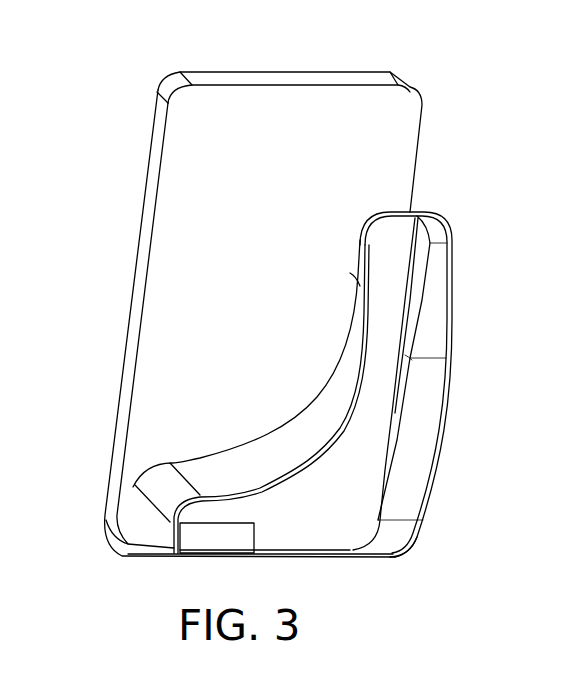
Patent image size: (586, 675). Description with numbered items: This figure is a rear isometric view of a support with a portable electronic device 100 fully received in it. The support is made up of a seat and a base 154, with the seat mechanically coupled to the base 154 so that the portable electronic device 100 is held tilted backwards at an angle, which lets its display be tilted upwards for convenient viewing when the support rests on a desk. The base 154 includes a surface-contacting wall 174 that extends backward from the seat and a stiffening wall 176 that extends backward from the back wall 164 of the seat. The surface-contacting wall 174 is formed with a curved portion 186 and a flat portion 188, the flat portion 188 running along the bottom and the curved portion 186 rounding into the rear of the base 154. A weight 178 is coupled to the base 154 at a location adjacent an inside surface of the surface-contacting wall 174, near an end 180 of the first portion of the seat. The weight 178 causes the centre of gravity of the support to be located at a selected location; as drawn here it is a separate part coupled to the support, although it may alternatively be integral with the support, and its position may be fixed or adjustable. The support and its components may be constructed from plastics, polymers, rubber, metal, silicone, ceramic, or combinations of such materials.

The portable electronic device 100 is at (411, 161).
The base 154 is at (430, 496).
The back wall 164 is at (358, 501).
The surface-contacting wall 174 is at (370, 544).
The stiffening wall 176 is at (438, 318).
The weight 178 is at (192, 540).
The end of the first portion of the seat 180 is at (142, 518).
The curved portion 186 is at (407, 548).
The flat portion 188 is at (305, 556).